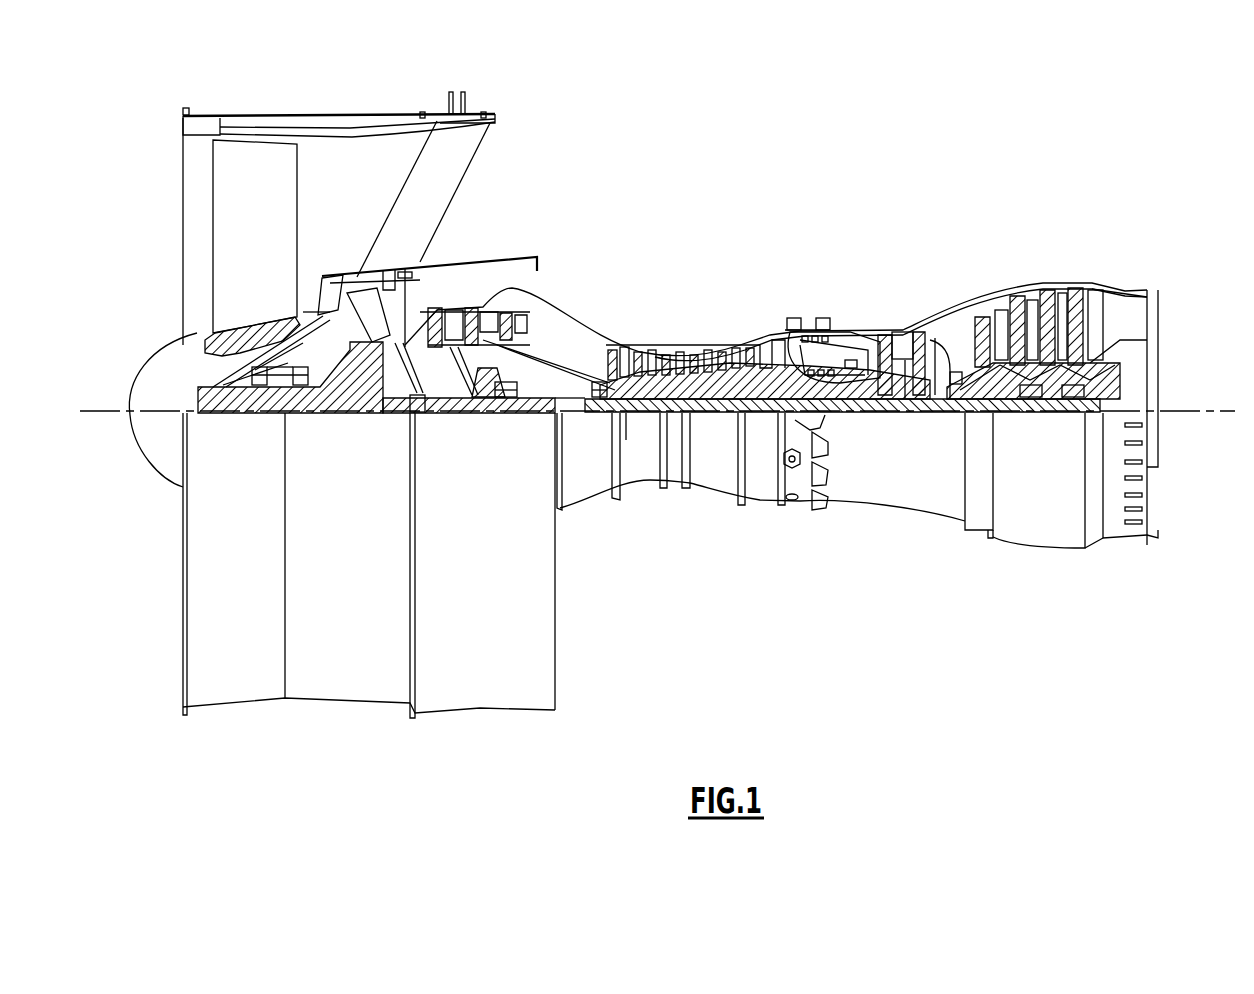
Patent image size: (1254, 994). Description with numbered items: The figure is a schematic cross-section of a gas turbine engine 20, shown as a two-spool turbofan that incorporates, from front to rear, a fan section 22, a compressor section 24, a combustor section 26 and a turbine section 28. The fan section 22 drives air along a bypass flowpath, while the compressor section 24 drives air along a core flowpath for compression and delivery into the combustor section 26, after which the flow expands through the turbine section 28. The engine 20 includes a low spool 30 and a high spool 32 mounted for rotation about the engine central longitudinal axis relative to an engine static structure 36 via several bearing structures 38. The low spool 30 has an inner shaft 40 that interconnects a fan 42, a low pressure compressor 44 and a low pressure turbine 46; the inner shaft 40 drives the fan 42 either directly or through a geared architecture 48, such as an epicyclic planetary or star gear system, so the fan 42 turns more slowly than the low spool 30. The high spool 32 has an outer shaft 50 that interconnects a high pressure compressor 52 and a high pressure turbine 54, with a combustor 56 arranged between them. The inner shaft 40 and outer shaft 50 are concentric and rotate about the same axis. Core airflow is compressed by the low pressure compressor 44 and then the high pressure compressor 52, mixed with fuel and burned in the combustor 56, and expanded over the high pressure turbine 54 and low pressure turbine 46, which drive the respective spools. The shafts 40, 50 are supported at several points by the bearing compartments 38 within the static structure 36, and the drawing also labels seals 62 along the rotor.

The gas turbine engine 20 is at (928, 160).
The fan section 22 is at (410, 96).
The compressor section 24 is at (418, 228).
The combustor section 26 is at (885, 228).
The turbine section 28 is at (1097, 228).
The low spool 30 is at (713, 420).
The high spool 32 is at (760, 380).
The engine static structure 36 is at (757, 505).
The bearing structures 38 is at (960, 283).
The inner shaft 40 is at (580, 415).
The fan 42 is at (263, 254).
The low pressure compressor 44 is at (485, 325).
The low pressure turbine 46 is at (1035, 300).
The geared architecture 48 is at (375, 395).
The outer shaft 50 is at (842, 395).
The high pressure compressor 52 is at (688, 385).
The high pressure turbine 54 is at (905, 330).
The combustor 56 is at (830, 353).
The seals 62 is at (630, 415).